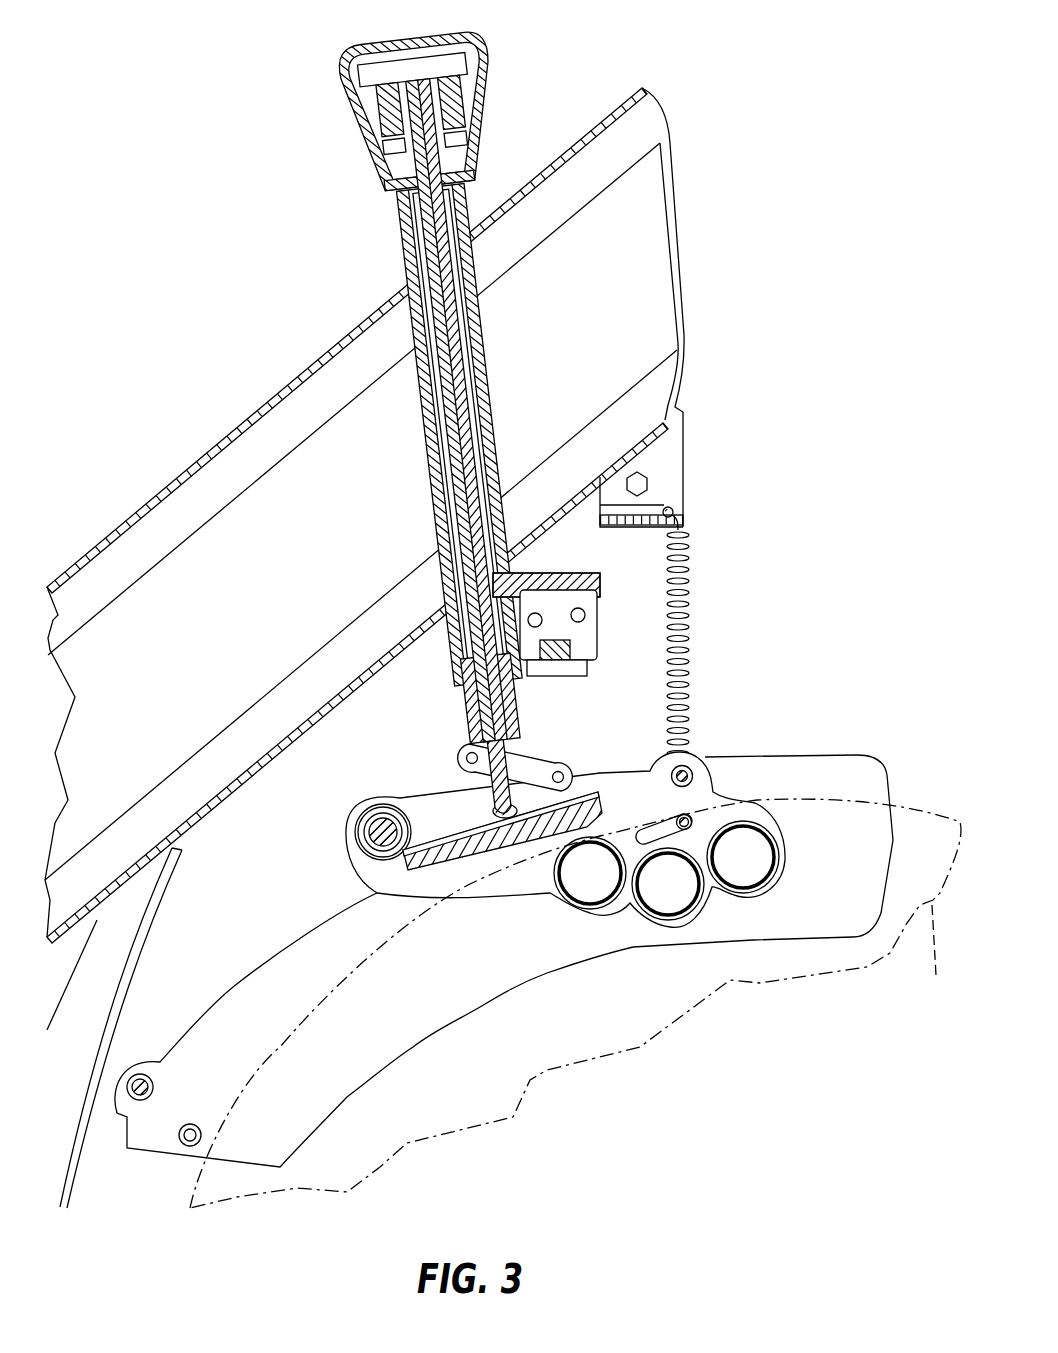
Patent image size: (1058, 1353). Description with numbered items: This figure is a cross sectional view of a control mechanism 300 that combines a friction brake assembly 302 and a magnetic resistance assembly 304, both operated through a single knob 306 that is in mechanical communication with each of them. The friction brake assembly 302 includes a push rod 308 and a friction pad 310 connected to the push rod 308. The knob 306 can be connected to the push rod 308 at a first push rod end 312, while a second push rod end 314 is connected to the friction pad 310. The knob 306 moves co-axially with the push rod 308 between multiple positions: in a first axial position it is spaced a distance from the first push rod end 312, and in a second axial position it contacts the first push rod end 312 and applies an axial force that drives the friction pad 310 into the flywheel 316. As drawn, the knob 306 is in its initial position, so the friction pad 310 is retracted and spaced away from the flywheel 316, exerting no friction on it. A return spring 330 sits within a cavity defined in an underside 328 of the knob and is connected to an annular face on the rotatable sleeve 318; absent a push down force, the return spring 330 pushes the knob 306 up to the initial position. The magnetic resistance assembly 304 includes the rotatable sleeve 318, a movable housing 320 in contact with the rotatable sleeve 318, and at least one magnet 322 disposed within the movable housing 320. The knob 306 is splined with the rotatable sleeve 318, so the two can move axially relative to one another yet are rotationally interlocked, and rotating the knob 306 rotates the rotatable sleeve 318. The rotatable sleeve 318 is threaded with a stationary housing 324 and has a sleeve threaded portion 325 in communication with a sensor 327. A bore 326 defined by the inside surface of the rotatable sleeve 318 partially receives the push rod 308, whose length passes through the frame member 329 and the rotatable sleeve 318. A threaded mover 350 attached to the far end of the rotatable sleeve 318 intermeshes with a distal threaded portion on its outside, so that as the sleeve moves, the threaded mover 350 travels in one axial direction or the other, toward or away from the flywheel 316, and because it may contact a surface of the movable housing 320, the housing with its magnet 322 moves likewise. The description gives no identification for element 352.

The control mechanism 300 is at (459, 637).
The friction brake assembly 302 is at (418, 780).
The magnetic resistance assembly 304 is at (597, 848).
The knob 306 is at (488, 78).
The push rod 308 is at (423, 143).
The friction pad 310 is at (500, 828).
The first push rod end 312 is at (459, 436).
The second push rod end 314 is at (592, 788).
The flywheel 316 is at (575, 1003).
The rotatable sleeve 318 is at (438, 150).
The movable housing 320 is at (877, 777).
The magnet 322 is at (746, 859).
The stationary housing 324 is at (452, 652).
The sleeve threaded portion 325 is at (583, 638).
The bore 326 is at (435, 258).
The sensor 327 is at (524, 564).
The underside 328 is at (450, 80).
The frame member 329 is at (175, 495).
The return spring 330 is at (407, 103).
The threaded mover 350 is at (468, 720).
The link arm 352 is at (510, 748).